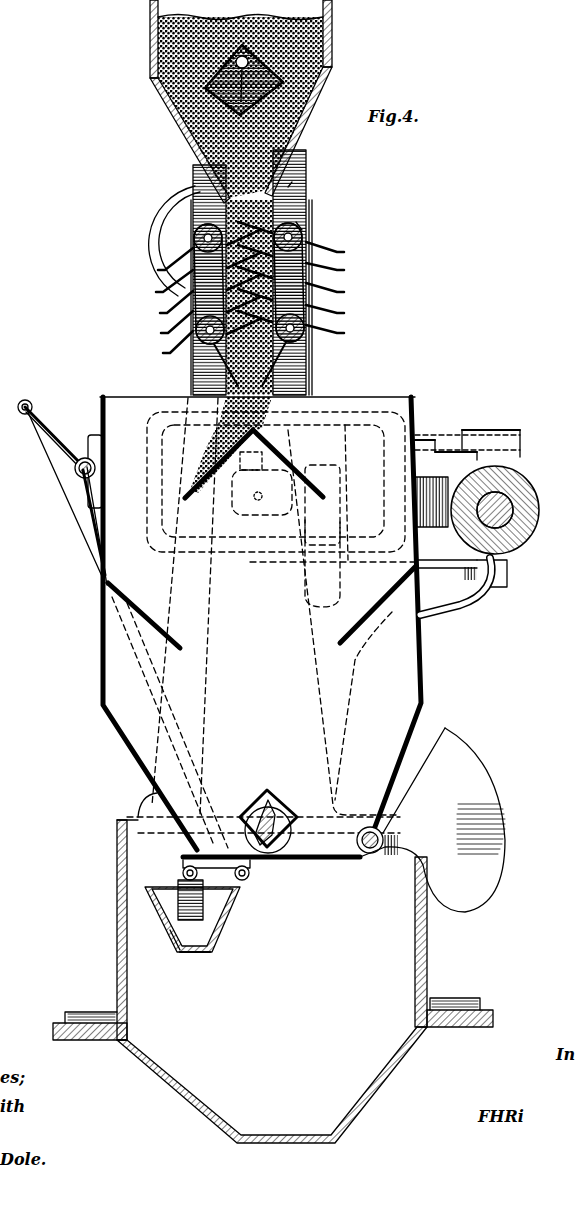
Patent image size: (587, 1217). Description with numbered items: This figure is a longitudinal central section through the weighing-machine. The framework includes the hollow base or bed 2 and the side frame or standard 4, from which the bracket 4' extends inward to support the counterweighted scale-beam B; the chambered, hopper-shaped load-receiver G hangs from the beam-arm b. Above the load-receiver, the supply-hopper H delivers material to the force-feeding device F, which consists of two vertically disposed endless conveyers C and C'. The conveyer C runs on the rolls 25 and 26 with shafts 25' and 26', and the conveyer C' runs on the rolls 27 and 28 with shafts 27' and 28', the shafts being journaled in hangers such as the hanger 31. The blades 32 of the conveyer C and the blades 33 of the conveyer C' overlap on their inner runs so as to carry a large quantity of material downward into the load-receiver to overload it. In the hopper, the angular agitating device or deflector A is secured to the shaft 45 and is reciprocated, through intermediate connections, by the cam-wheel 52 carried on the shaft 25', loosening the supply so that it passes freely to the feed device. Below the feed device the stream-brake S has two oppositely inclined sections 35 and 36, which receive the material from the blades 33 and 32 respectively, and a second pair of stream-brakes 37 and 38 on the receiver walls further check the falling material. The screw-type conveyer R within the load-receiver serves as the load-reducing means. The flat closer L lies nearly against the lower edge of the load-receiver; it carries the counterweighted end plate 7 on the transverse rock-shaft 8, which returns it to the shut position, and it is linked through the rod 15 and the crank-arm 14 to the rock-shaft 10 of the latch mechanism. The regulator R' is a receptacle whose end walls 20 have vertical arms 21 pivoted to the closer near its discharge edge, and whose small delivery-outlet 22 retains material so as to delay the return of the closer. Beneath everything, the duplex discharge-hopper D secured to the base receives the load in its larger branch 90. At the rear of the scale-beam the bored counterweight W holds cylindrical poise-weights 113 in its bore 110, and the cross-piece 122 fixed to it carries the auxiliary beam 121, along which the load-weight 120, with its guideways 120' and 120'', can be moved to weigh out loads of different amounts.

The agitating device or deflector A is at (250, 56).
The supply-hopper H is at (168, 103).
The shaft 45 is at (244, 80).
The bearing or hanger 31 is at (288, 187).
The shaft 27' is at (320, 206).
The cam-wheel 52 is at (170, 205).
The roll 27 is at (312, 228).
The shaft 25' is at (167, 284).
The conveyer C' is at (305, 282).
The roll 25 is at (167, 250).
The feed device F is at (183, 262).
The blades 32 is at (165, 287).
The blades 33 is at (347, 332).
The conveyer C is at (209, 297).
The roll 26 is at (190, 353).
The shaft 26' is at (216, 369).
The shaft 28' is at (267, 366).
The roll 28 is at (291, 354).
The side frame or standard 4 is at (324, 297).
The load-receiver G is at (385, 398).
The crank-arm 14 is at (50, 430).
The rock-shaft 10 is at (75, 470).
The rod 15 is at (78, 548).
The guideway 120' is at (440, 421).
The auxiliary beam 121 is at (452, 438).
The cross-piece 122 is at (508, 445).
The scale-beam B is at (467, 456).
The stream-brake S is at (231, 447).
The brake-section 36 is at (290, 476).
The brake-section 35 is at (195, 500).
The beam-arm b is at (258, 516).
The load-weight 120 is at (409, 502).
The poise-weights 113 is at (514, 512).
The counterweight W is at (504, 510).
The bore or chamber 110 is at (508, 535).
The stream-brake 37 is at (148, 615).
The stream-brake 38 is at (372, 610).
The bracket 4' is at (256, 623).
The guideway 120'' is at (458, 592).
The counterweighted end plate 7 is at (432, 820).
The conveyer R is at (277, 823).
The rock-shaft 8 is at (372, 853).
The closer L is at (290, 862).
The vertical arms 21 is at (183, 880).
The hollow base or bed 2 is at (117, 905).
The end walls 20 is at (185, 928).
The regulator R' is at (192, 919).
The delivery-outlet 22 is at (195, 953).
The duplex discharge-hopper D is at (273, 1032).
The larger branch or conduit 90 is at (197, 1112).